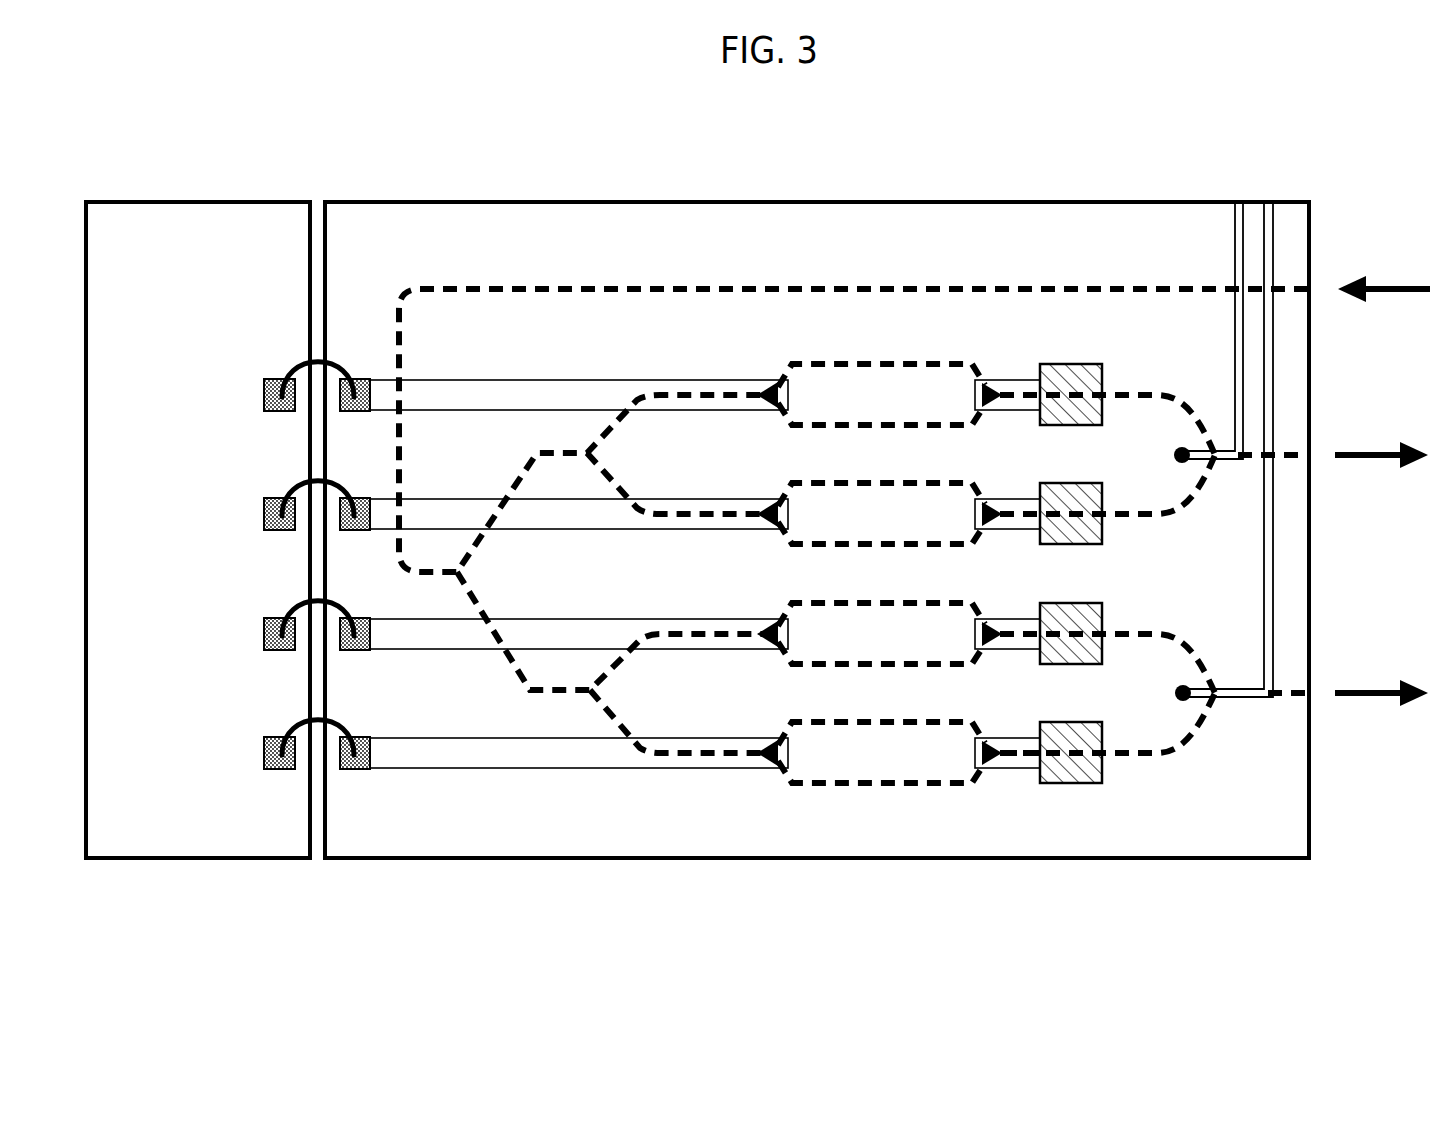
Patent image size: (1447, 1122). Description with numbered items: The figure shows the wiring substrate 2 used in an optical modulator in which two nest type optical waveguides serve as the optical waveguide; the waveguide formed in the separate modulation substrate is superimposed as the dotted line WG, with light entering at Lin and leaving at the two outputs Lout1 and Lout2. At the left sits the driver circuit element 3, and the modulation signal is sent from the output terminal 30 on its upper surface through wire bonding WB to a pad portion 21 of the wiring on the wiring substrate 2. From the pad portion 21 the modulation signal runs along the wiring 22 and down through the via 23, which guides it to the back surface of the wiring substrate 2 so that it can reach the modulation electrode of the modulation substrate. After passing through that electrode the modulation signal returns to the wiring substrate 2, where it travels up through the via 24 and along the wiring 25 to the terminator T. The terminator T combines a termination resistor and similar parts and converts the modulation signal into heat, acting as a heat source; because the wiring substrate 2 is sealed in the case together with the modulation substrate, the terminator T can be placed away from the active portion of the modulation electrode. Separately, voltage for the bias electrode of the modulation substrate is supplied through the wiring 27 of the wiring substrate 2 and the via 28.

The wiring substrate 2 is at (1113, 222).
The driver circuit element 3 is at (160, 230).
The pad portion 21 is at (362, 770).
The wiring 22 is at (627, 770).
The via 23 is at (770, 770).
The via 24 is at (995, 770).
The wiring 25 is at (1013, 770).
The wiring 27 is at (1273, 586).
The via 28 is at (1187, 702).
The output terminal 30 is at (280, 770).
The wire bonding WB is at (292, 362).
The optical waveguide WG is at (683, 282).
The terminator T is at (1085, 785).
The input light Lin is at (1384, 275).
The output light 1 Lout1 is at (1382, 437).
The output light 2 Lout2 is at (1384, 676).